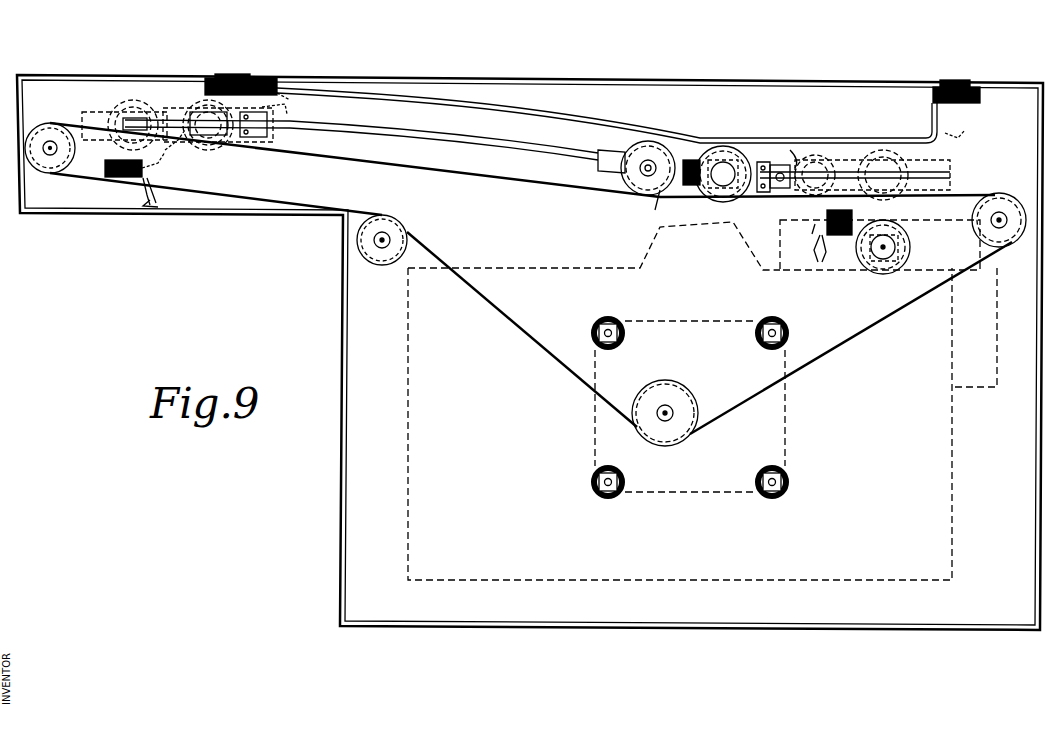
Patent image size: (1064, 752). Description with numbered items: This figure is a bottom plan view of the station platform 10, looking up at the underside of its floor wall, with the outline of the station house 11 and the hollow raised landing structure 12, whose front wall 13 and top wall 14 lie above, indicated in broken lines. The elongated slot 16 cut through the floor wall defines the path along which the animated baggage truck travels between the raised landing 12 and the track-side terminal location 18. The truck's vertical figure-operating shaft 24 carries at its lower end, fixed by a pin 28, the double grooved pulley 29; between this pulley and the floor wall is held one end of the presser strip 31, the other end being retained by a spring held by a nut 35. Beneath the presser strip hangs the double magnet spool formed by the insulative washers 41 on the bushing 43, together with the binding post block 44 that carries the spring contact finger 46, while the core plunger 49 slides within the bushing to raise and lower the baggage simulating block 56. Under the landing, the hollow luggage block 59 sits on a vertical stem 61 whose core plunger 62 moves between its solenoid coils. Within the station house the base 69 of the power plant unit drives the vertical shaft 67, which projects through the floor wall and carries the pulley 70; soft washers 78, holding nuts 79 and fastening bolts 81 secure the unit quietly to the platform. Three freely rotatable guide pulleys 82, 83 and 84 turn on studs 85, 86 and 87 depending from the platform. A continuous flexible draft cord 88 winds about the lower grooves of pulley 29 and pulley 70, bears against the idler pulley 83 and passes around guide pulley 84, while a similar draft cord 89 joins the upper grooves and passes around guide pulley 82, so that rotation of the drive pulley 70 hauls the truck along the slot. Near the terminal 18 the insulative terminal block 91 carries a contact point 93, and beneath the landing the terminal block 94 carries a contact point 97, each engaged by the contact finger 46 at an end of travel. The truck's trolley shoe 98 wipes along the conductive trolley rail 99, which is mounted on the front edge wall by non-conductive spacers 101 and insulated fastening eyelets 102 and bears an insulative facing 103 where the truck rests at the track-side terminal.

The station platform 10 is at (343, 236).
The station house 11 is at (952, 327).
The raised landing structure 12 is at (1018, 262).
The front wall 13 is at (880, 234).
The top wall 14 is at (848, 262).
The elongated slot 16 is at (462, 134).
The track-side terminal location 18 is at (170, 95).
The figure-operating shaft 24 is at (648, 160).
The pin 28 is at (655, 165).
The double grooved pulley 29 is at (640, 150).
The presser strip 31 is at (605, 152).
The nut 35 is at (790, 175).
The washers 41 is at (735, 168).
The bushing 43 is at (722, 162).
The binding post block 44 is at (714, 162).
The spring contact finger 46 is at (653, 212).
The core plunger 49 is at (726, 165).
The baggage simulating block 56 is at (656, 222).
The hollow block 59 is at (940, 232).
The vertical stem 61 is at (940, 249).
The core plunger 62 is at (885, 252).
The vertical shaft 67 is at (672, 413).
The base 69 is at (778, 415).
The pulley 70 is at (683, 392).
The washers 78 is at (604, 318).
The holding nuts 79 is at (780, 338).
The fastening bolts 81 is at (768, 330).
The guide pulley 82 is at (1012, 205).
The idler pulley 83 is at (372, 258).
The guide pulley 84 is at (46, 170).
The stud 85 is at (1000, 215).
The stud 86 is at (386, 250).
The stud 87 is at (50, 145).
The draft cord 88 is at (285, 204).
The draft cord 89 is at (728, 199).
The terminal block 91 is at (108, 172).
The contact point 93 is at (160, 174).
The terminal block 94 is at (838, 236).
The contact point 97 is at (816, 240).
The trolley shoe 98 is at (800, 136).
The trolley rail 99 is at (470, 97).
The non-conductive spacers 101 is at (212, 78).
The insulated fastening eyelets 102 is at (235, 76).
The facing 103 is at (282, 92).